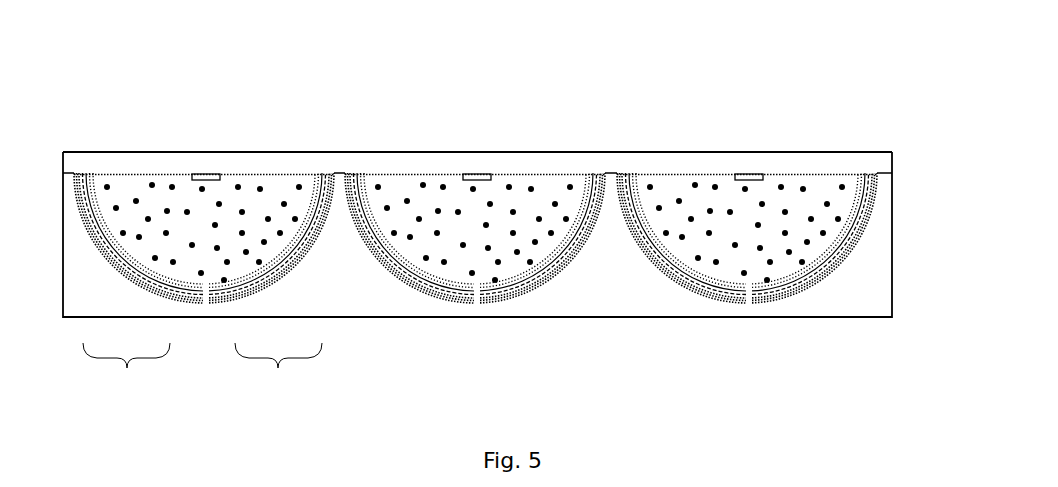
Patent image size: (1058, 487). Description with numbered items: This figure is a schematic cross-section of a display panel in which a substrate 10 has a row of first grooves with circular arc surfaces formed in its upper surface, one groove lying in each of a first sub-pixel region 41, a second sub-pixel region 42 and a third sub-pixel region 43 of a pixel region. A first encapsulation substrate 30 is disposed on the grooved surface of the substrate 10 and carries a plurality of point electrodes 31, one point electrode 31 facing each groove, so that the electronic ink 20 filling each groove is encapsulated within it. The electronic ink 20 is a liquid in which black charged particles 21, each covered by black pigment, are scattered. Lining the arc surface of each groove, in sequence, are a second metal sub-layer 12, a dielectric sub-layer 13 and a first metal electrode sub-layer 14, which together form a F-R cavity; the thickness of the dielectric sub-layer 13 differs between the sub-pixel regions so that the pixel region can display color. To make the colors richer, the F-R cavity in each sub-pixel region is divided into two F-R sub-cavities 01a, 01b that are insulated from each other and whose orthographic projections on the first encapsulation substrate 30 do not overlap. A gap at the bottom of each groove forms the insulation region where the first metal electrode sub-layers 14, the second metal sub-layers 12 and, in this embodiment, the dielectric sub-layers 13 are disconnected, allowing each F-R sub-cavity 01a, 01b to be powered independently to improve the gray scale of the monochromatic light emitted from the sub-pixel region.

The substrate 10 is at (870, 271).
The first encapsulation substrate 30 is at (883, 162).
The point electrode 31 is at (478, 178).
The electronic ink 20 is at (835, 231).
The black charged particles 21 is at (828, 203).
The second metal sub-layer 12 is at (135, 280).
The dielectric sub-layer 13 is at (152, 283).
The first metal electrode sub-layer 14 is at (172, 283).
The first sub-pixel region 41 is at (213, 152).
The second sub-pixel region 42 is at (440, 152).
The third sub-pixel region 43 is at (730, 152).
The F-R sub-cavity 01a is at (126, 372).
The F-R sub-cavity 01b is at (278, 372).